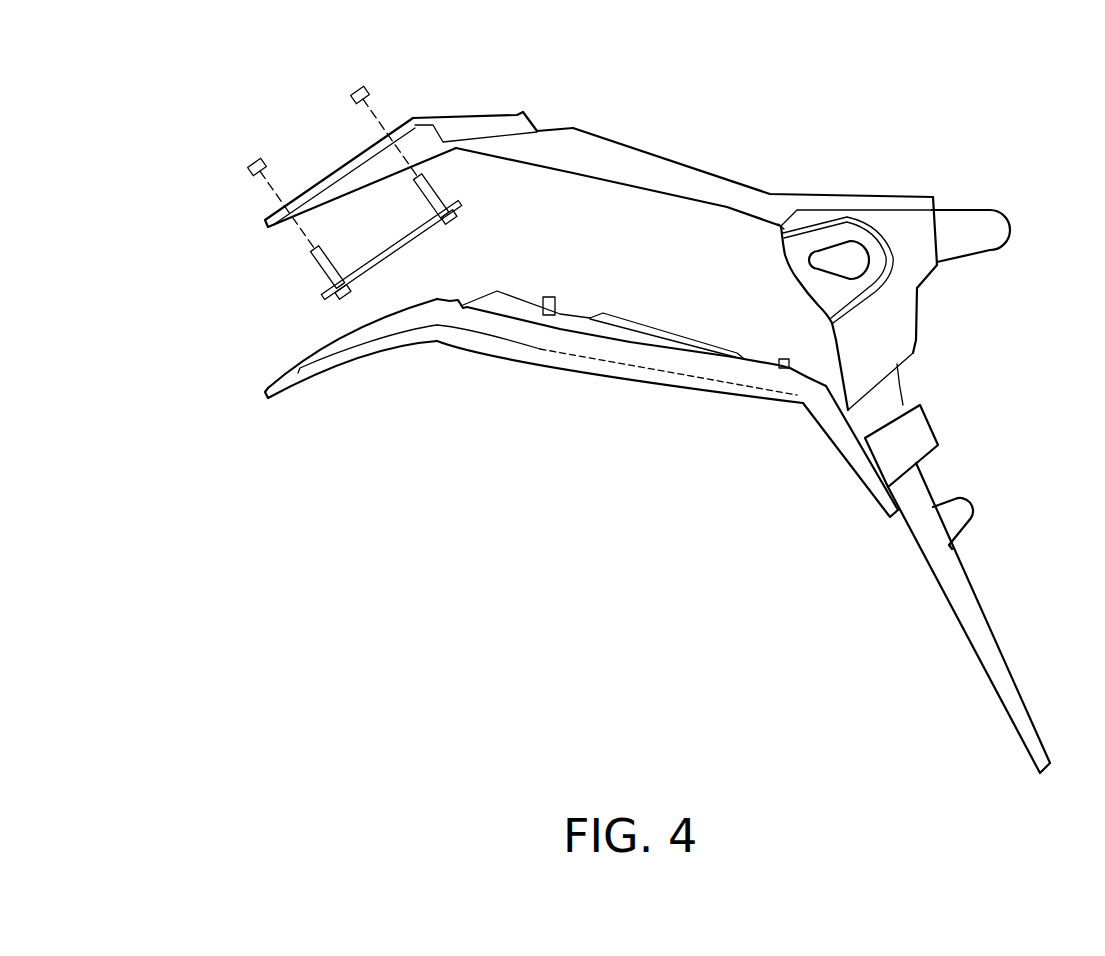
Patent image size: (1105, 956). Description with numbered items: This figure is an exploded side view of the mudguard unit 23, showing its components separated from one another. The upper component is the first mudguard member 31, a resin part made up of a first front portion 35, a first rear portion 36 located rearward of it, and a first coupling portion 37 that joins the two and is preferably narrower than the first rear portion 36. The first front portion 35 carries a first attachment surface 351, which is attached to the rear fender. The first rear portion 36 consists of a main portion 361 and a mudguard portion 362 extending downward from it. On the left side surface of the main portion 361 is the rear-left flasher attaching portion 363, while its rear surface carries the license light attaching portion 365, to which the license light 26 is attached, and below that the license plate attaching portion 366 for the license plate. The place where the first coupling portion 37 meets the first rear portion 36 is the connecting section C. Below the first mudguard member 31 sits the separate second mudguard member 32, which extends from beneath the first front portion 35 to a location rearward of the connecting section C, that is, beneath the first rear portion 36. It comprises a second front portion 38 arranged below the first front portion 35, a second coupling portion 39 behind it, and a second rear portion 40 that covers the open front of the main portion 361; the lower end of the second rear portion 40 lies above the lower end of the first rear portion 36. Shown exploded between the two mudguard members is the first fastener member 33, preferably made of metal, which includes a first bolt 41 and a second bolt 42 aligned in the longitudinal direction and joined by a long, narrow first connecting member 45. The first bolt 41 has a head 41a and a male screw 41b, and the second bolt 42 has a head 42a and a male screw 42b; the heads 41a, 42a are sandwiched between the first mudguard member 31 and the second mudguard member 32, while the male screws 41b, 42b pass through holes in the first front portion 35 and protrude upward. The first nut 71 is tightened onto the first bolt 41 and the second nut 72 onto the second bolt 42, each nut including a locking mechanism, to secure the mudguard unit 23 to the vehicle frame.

The mudguard unit 23 is at (768, 121).
The license light 26 is at (988, 222).
The first mudguard member 31 is at (628, 137).
The second mudguard member 32 is at (538, 378).
The first fastener member 33 is at (414, 241).
The first front portion 35 is at (343, 166).
The first attachment surface 351 is at (315, 182).
The first rear portion 36 is at (903, 227).
The first coupling portion 37 is at (670, 170).
The second front portion 38 is at (342, 365).
The second coupling portion 39 is at (628, 370).
The second rear portion 40 is at (858, 448).
The first bolt 41 is at (312, 270).
The head 41a is at (347, 295).
The male screw 41b is at (310, 257).
The second bolt 42 is at (438, 178).
The head 42a is at (449, 213).
The male screw 42b is at (420, 190).
The first connecting member 45 is at (462, 306).
The first nut 71 is at (243, 158).
The second nut 72 is at (362, 85).
The main portion 361 is at (927, 287).
The mudguard portion 362 is at (957, 582).
The rear-left flasher attaching portion 363 is at (818, 293).
The license light attaching portion 365 is at (940, 240).
The license plate attaching portion 366 is at (917, 343).
The connecting section C is at (783, 227).